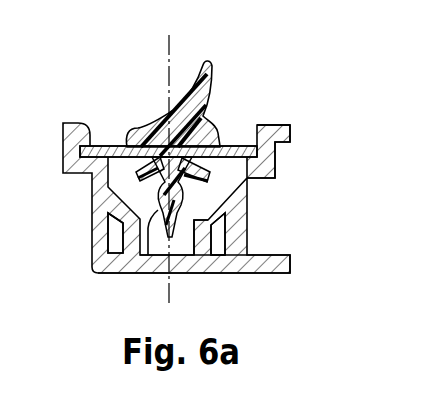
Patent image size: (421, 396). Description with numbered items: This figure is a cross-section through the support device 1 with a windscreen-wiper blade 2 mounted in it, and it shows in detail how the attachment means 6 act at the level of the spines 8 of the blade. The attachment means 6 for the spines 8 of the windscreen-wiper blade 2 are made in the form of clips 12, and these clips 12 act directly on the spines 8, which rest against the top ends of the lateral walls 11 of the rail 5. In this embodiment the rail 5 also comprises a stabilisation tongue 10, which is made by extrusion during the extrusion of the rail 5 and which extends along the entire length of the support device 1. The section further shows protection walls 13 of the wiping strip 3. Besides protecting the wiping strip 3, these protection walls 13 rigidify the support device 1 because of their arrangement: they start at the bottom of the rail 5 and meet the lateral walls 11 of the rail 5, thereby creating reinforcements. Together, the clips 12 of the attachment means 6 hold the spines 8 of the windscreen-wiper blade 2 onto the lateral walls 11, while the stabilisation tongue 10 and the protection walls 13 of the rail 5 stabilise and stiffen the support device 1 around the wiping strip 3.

The support device 1 is at (202, 201).
The windscreen-wiper blade 2 is at (220, 68).
The wiping strip 3 is at (155, 258).
The rail 5 is at (178, 258).
The attachment means 6 is at (283, 157).
The spines 8 is at (232, 146).
The stabilisation tongue 10 is at (285, 262).
The lateral walls 11 is at (96, 239).
The clips 12 is at (259, 124).
The protection walls 13 is at (207, 241).